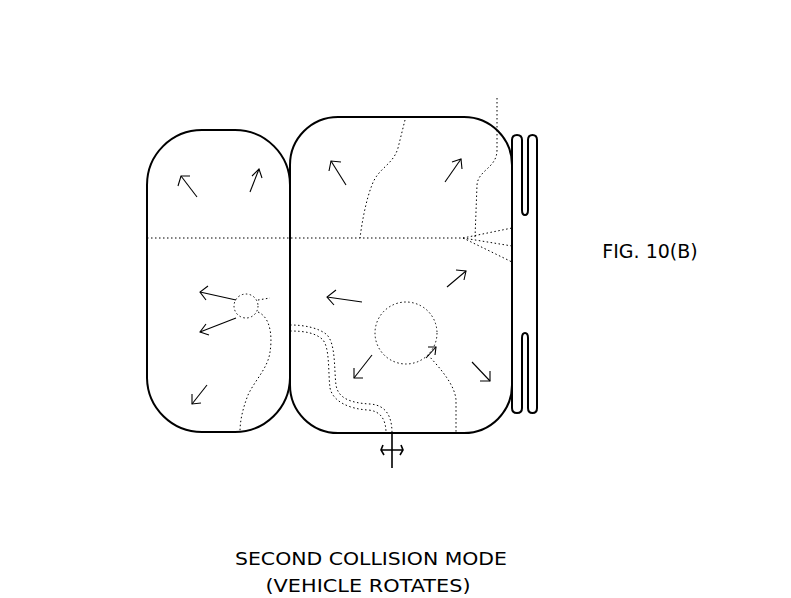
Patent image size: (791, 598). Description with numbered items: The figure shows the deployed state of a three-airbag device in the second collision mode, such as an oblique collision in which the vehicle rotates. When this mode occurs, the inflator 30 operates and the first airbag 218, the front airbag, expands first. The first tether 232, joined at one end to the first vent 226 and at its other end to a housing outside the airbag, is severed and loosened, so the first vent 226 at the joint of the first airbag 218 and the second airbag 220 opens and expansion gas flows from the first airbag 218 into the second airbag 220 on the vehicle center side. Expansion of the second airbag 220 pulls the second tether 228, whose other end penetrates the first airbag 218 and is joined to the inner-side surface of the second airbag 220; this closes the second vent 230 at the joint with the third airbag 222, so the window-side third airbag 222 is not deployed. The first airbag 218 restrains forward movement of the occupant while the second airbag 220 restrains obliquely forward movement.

The inflator 30 is at (457, 434).
The first airbag 218 is at (330, 118).
The second airbag 220 is at (235, 130).
The third airbag 222 is at (537, 137).
The first vent 226 is at (240, 432).
The second tether 228 is at (405, 120).
The second vent 230 is at (491, 153).
The first tether 232 is at (345, 434).